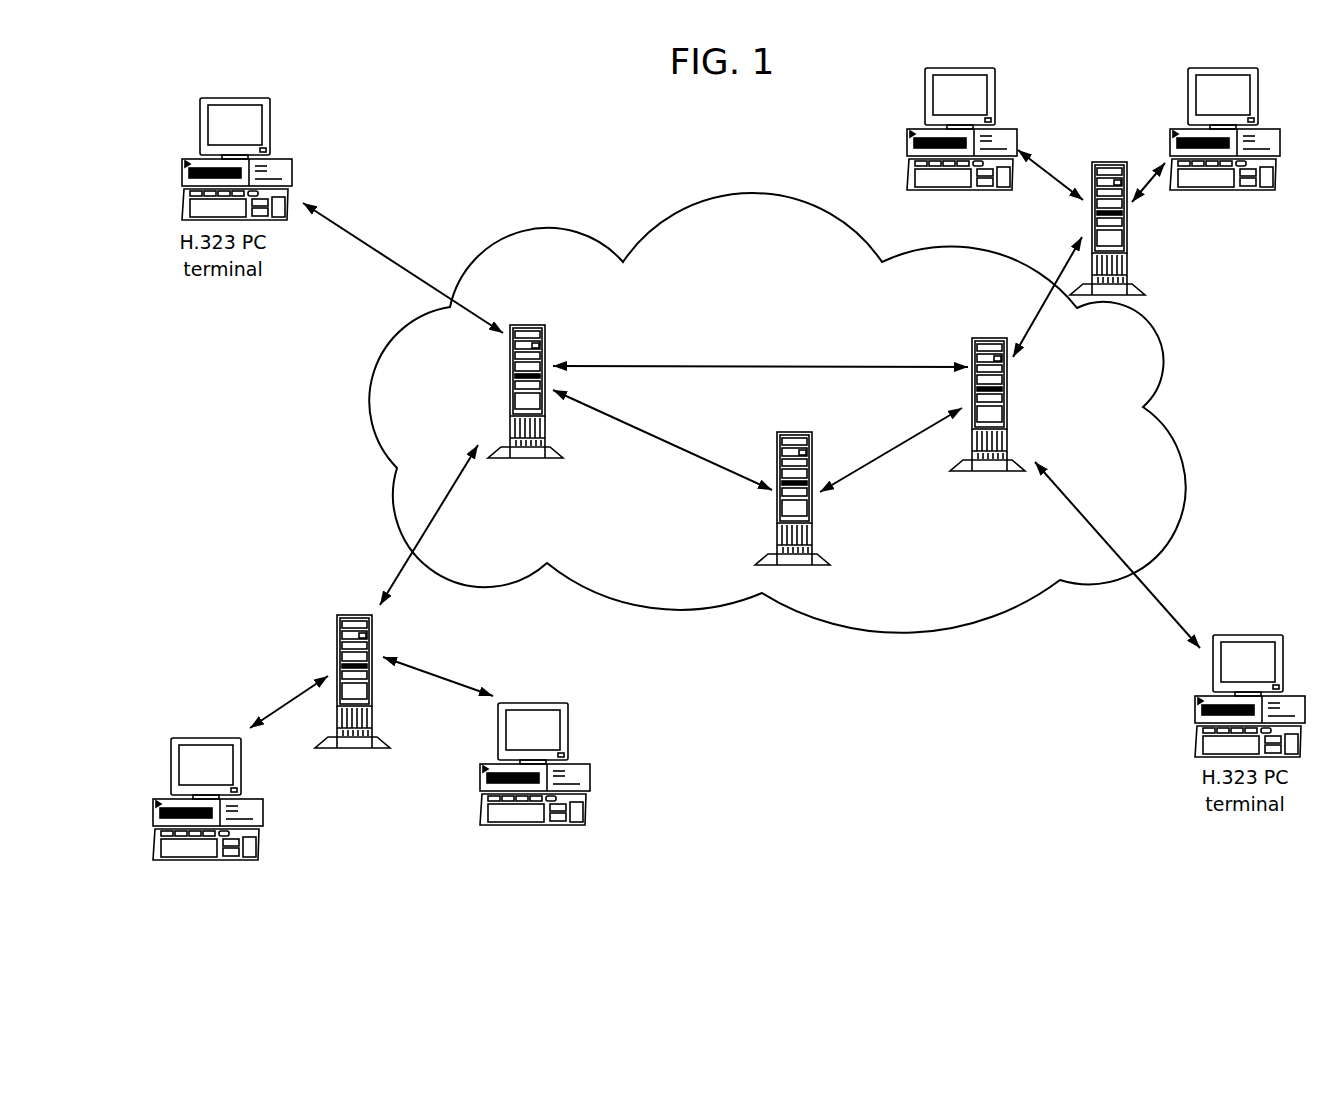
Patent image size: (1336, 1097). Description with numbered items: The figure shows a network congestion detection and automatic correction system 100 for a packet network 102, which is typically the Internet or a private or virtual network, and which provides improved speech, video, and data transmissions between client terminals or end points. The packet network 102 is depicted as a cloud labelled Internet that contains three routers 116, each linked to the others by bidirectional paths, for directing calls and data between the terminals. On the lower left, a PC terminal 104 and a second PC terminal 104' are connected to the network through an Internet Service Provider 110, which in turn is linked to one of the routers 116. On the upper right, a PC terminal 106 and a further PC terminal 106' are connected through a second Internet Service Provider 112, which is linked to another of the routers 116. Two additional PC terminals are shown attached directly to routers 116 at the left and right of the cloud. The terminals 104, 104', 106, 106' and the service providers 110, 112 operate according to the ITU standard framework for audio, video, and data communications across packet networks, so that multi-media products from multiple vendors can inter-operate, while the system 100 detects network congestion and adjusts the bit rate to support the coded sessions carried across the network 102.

The network congestion detection and automatic correction system 100 is at (536, 118).
The packet network 102 is at (785, 194).
The terminal 104 is at (205, 764).
The terminal 104' is at (555, 740).
The terminal 106 is at (987, 121).
The terminal 106' is at (1247, 115).
The Internet Service Provider 110 is at (338, 623).
The Internet Service Provider 112 is at (1110, 161).
The router 116 is at (533, 326).